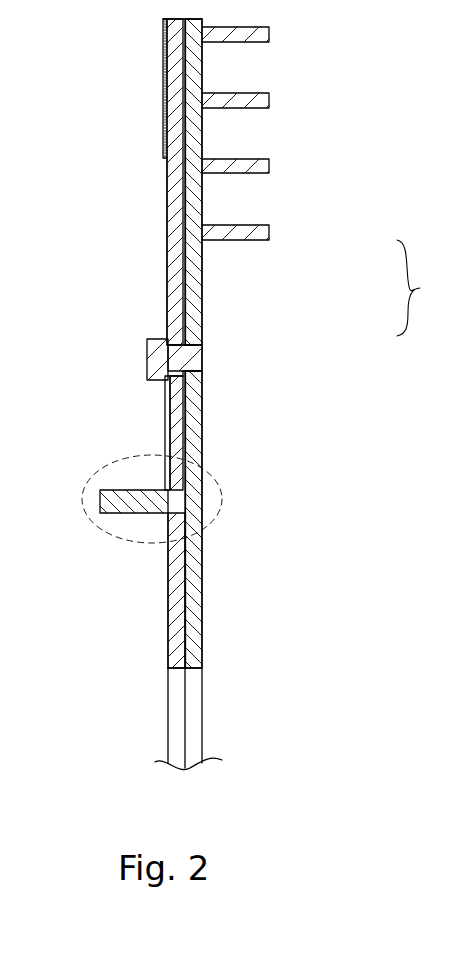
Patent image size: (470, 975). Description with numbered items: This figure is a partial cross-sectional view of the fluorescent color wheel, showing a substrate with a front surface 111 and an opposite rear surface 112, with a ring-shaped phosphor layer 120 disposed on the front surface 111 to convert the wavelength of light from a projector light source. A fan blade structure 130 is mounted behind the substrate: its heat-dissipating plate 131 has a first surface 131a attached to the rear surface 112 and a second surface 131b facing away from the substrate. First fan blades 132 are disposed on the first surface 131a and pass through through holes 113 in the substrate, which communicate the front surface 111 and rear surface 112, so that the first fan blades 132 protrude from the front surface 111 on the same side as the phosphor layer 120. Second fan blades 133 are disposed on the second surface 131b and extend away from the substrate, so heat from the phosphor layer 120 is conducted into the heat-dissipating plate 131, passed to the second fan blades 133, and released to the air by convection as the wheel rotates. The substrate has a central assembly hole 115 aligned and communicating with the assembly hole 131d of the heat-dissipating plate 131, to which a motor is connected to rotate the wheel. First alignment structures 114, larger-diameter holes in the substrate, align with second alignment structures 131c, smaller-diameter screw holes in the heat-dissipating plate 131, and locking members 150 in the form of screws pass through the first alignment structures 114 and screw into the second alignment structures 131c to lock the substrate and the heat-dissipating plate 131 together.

The phosphor layer 120 is at (163, 92).
The front surface 111 is at (167, 593).
The rear surface 112 is at (168, 650).
The through holes 113 is at (166, 514).
The first alignment structures 114 is at (166, 386).
The assembly hole 115 is at (173, 713).
The fan blade structure 130 is at (433, 288).
The heat-dissipating plate 131 is at (202, 308).
The first surface 131a is at (202, 622).
The second surface 131b is at (202, 573).
The second alignment structures 131c is at (193, 343).
The assembly hole 131d is at (196, 713).
The first fan blades 132 is at (123, 500).
The second fan blades 133 is at (258, 233).
The locking members 150 is at (147, 360).